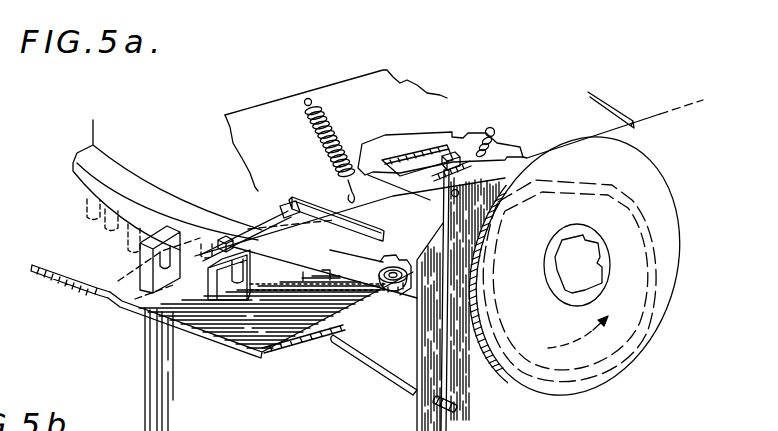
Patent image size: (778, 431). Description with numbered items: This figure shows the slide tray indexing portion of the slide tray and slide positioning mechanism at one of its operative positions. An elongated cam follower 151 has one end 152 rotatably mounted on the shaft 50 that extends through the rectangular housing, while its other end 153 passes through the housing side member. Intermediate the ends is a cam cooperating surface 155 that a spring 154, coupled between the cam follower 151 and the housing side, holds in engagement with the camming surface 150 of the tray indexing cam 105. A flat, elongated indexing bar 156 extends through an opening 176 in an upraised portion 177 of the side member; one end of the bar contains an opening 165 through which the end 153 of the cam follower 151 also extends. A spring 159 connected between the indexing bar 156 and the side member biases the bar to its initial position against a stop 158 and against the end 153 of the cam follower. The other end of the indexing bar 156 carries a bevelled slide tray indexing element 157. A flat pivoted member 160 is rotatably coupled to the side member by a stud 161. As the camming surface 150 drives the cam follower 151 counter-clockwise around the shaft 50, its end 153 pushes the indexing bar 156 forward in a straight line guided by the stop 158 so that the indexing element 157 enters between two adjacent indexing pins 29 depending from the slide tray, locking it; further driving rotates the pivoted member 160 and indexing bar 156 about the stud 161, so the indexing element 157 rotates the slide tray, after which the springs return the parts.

The indexing pins 29 is at (127, 245).
The shaft 50 is at (373, 370).
The tray indexing cam 105 is at (578, 334).
The camming surface 150 is at (527, 380).
The cam follower 151 is at (430, 347).
The end of cam follower 152 is at (448, 414).
The end of cam follower 153 is at (493, 131).
The spring 154 is at (510, 140).
The cam cooperating surface 155 is at (464, 196).
The indexing bar 156 is at (382, 142).
The slide tray indexing element 157 is at (216, 302).
The stop 158 is at (228, 237).
The spring 159 is at (326, 122).
The pivoted member 160 is at (336, 290).
The stud 161 is at (385, 257).
The opening 165 is at (412, 160).
The opening 176 is at (282, 209).
The upraised portion 177 is at (306, 200).